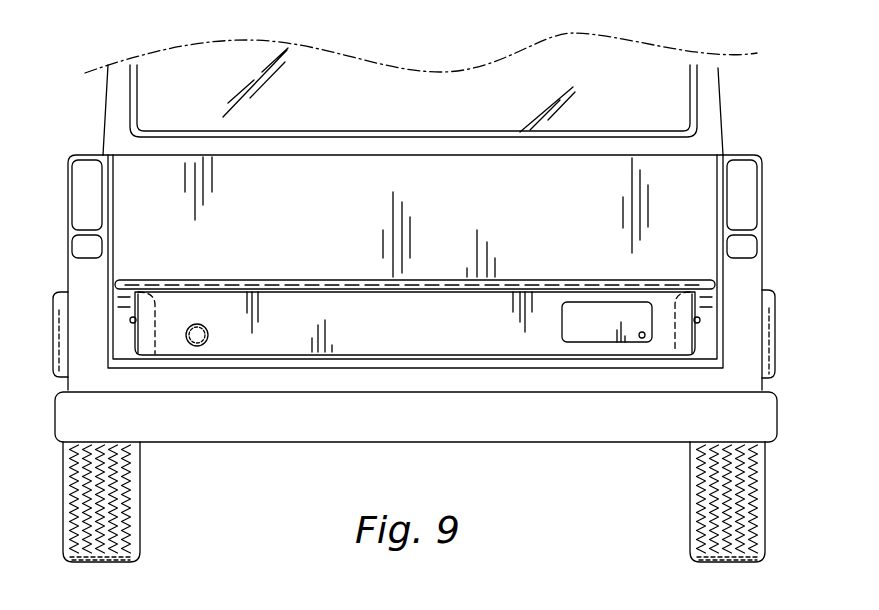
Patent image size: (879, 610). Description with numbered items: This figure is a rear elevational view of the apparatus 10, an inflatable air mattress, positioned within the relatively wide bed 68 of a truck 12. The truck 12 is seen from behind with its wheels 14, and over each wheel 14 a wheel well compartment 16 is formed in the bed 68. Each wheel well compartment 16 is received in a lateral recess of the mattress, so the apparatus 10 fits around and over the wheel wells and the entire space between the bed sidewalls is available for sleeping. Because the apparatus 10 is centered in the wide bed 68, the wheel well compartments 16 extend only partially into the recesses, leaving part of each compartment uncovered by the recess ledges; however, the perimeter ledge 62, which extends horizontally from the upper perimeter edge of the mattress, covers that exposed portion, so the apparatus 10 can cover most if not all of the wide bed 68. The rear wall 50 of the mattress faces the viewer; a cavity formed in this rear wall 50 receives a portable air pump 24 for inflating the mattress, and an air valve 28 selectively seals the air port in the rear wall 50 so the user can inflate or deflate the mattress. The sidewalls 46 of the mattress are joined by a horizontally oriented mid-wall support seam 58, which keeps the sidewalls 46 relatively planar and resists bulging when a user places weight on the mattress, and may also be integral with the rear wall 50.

The apparatus 10 is at (160, 252).
The truck 12 is at (722, 128).
The wheel 14 is at (137, 485).
The wheel well compartment 16 is at (125, 333).
The portable air pump 24 is at (635, 337).
The air valve 28 is at (201, 346).
The sidewall 46 is at (135, 342).
The rear wall 50 is at (388, 333).
The mid-wall support seam 58 is at (128, 318).
The perimeter ledge 62 is at (240, 282).
The wide bed 68 is at (615, 370).